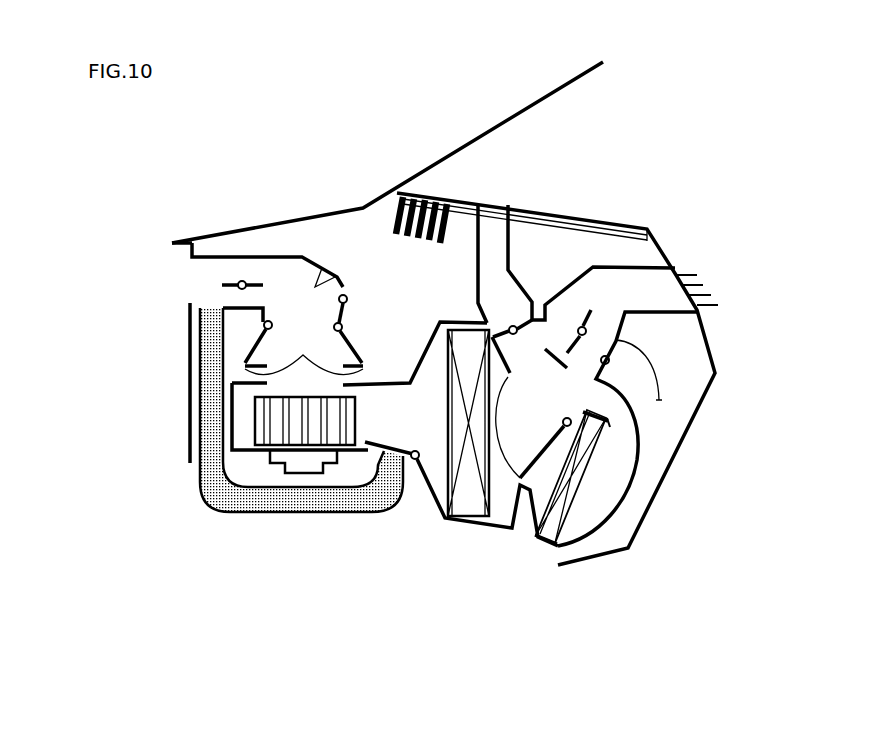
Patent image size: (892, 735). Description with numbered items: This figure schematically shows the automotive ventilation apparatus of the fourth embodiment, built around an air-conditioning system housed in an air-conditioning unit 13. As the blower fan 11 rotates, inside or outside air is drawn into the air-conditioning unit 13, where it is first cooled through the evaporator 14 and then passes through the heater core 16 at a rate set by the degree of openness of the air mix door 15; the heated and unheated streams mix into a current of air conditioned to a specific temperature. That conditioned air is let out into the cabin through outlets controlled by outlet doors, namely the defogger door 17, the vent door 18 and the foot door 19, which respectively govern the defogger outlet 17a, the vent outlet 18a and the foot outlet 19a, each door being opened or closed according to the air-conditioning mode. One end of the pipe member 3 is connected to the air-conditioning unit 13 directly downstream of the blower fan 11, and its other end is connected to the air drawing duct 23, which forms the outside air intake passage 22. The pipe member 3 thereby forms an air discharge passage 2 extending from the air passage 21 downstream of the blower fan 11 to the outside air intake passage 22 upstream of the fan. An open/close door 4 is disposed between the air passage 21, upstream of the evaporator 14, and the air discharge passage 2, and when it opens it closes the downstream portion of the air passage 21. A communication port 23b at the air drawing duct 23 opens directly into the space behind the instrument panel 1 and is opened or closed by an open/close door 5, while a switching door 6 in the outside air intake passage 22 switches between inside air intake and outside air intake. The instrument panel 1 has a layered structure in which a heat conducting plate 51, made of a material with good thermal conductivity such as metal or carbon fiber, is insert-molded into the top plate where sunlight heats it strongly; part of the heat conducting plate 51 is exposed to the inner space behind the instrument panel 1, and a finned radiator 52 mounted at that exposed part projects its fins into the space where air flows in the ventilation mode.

The instrument panel 1 is at (618, 223).
The air discharge passage 2 is at (277, 503).
The pipe member 3 is at (205, 493).
The open/close door 4 is at (398, 493).
The open/close door 5 is at (350, 288).
The switching door 6 is at (230, 282).
The blower fan 11 is at (253, 422).
The air-conditioning unit 13 is at (387, 383).
The evaporator 14 is at (465, 516).
The air mix door 15 is at (547, 457).
The heater core 16 is at (548, 546).
The defogger door 17 is at (528, 333).
The defogger outlet 17a is at (492, 240).
The vent door 18 is at (590, 318).
The vent outlet 18a is at (687, 275).
The foot door 19 is at (598, 372).
The foot outlet 19a is at (592, 547).
The air passage 21 is at (382, 415).
The outside air intake passage 22 is at (248, 267).
The air drawing duct 23 is at (284, 256).
The communication port 23b is at (315, 287).
The heat conducting plate 51 is at (562, 217).
The radiator 52 is at (427, 247).